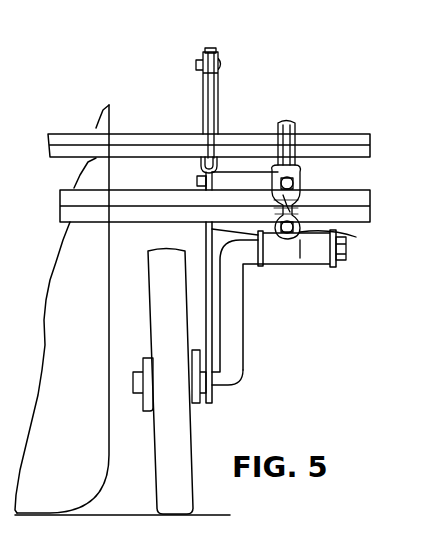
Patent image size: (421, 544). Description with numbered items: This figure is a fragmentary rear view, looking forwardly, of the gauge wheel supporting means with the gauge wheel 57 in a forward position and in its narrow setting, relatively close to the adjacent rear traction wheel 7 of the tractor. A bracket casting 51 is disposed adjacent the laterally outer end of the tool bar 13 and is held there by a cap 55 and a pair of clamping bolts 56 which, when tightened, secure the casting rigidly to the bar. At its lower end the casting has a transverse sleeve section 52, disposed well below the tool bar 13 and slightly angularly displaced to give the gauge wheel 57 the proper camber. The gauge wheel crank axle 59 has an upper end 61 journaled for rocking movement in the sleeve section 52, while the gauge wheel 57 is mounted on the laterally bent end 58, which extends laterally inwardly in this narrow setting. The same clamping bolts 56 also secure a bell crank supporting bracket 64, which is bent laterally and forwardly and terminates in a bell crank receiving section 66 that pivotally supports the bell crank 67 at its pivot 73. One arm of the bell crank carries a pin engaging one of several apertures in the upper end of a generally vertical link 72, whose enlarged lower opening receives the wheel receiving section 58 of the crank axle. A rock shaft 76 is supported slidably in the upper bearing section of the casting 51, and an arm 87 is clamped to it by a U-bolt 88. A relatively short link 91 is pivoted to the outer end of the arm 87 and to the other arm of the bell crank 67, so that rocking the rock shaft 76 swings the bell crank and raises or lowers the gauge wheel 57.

The rear traction wheel 7 is at (108, 110).
The tool bar 13 is at (362, 200).
The bracket casting 51 is at (299, 273).
The transverse sleeve section 52 is at (310, 255).
The cap 55 is at (297, 190).
The clamping bolts 56 is at (274, 202).
The gauge wheel 57 is at (157, 298).
The laterally bent end 58 is at (220, 390).
The gauge wheel crank axle 59 is at (253, 328).
The upper end 61 is at (348, 248).
The bell crank supporting bracket 64 is at (246, 167).
The bell crank receiving section 66 is at (218, 183).
The bell crank 67 is at (193, 170).
The link 72 is at (205, 236).
The pivot 73 is at (202, 181).
The rock shaft 76 is at (151, 140).
The arm 87 is at (227, 100).
The U-bolt 88 is at (216, 140).
The link 91 is at (210, 49).